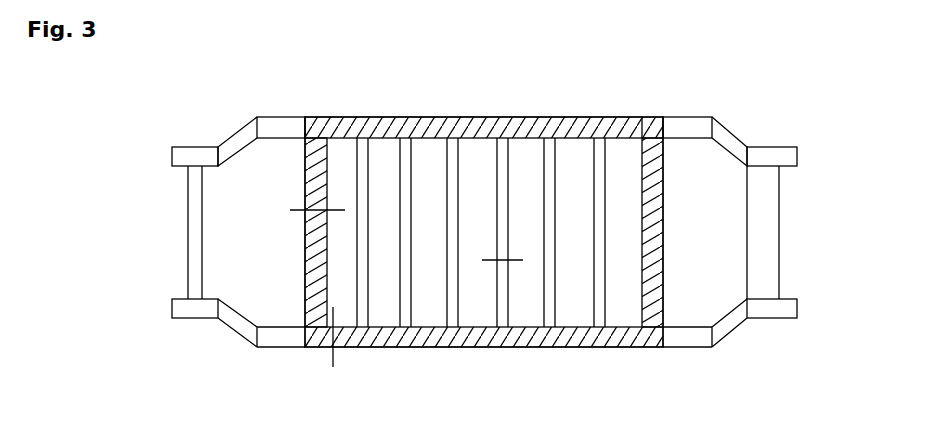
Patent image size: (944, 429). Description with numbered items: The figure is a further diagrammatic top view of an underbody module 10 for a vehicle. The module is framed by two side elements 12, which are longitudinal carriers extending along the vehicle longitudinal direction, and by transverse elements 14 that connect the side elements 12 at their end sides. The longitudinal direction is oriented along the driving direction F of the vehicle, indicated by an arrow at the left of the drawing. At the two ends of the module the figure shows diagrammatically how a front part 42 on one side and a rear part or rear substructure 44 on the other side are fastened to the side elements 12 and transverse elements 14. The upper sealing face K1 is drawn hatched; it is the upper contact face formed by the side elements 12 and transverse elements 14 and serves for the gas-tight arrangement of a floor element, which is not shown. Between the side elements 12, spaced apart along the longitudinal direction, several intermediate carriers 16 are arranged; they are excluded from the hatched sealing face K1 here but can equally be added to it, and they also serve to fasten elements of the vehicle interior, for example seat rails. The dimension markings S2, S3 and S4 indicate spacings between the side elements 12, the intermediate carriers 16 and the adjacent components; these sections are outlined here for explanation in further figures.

The underbody module 10 is at (725, 250).
The side element 12 is at (335, 128).
The transverse element 14 is at (315, 295).
The intermediate carrier 16 is at (365, 158).
The front part 42 is at (168, 109).
The rear substructure 44 is at (800, 109).
The upper sealing face K1 is at (647, 123).
The driving direction F is at (90, 227).
The spacing S2 is at (352, 315).
The spacing S3 is at (487, 268).
The spacing S4 is at (297, 232).